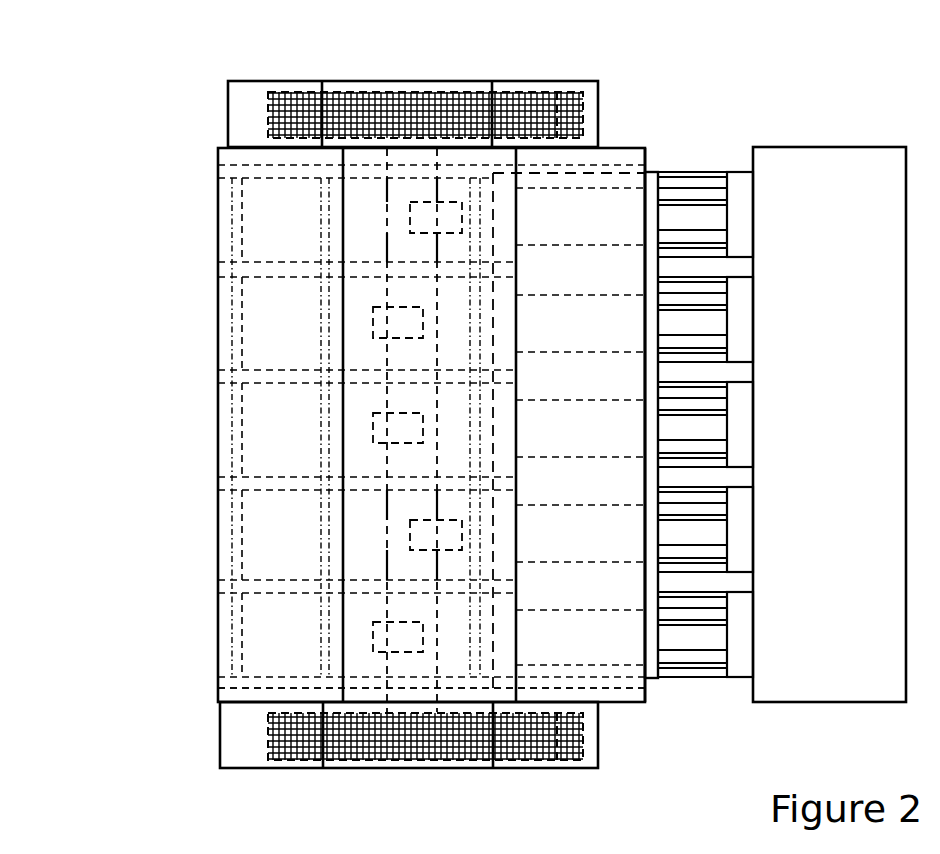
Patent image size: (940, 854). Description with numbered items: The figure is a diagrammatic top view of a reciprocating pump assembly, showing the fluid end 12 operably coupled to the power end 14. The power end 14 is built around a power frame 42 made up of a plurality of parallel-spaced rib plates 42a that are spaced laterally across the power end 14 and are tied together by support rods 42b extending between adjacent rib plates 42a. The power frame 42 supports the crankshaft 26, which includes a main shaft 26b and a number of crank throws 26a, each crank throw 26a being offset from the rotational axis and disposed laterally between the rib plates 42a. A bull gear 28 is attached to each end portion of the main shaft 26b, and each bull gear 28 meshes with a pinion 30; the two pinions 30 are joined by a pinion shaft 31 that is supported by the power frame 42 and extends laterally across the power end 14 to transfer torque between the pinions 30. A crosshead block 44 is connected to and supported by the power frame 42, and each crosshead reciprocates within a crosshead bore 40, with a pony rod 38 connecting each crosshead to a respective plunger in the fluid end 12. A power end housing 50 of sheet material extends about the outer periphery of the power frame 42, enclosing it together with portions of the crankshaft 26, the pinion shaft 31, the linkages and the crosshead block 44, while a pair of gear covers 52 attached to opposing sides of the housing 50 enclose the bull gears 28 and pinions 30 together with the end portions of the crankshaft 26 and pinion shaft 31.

The fluid end 12 is at (842, 165).
The power end 14 is at (168, 637).
The crankshaft 26 is at (463, 693).
The crank throws 26a is at (417, 427).
The main shaft 26b is at (400, 242).
The bull gear 28 is at (405, 100).
The pinion 30 is at (568, 95).
The pinion shaft 31 is at (572, 695).
The pony rod 38 is at (705, 424).
The crosshead bore 40 is at (580, 426).
The power frame 42 is at (606, 160).
The rib plates 42a is at (232, 172).
The support rods 42b is at (480, 452).
The crosshead block 44 is at (650, 172).
The power end housing 50 is at (647, 693).
The gear covers 52 is at (228, 112).